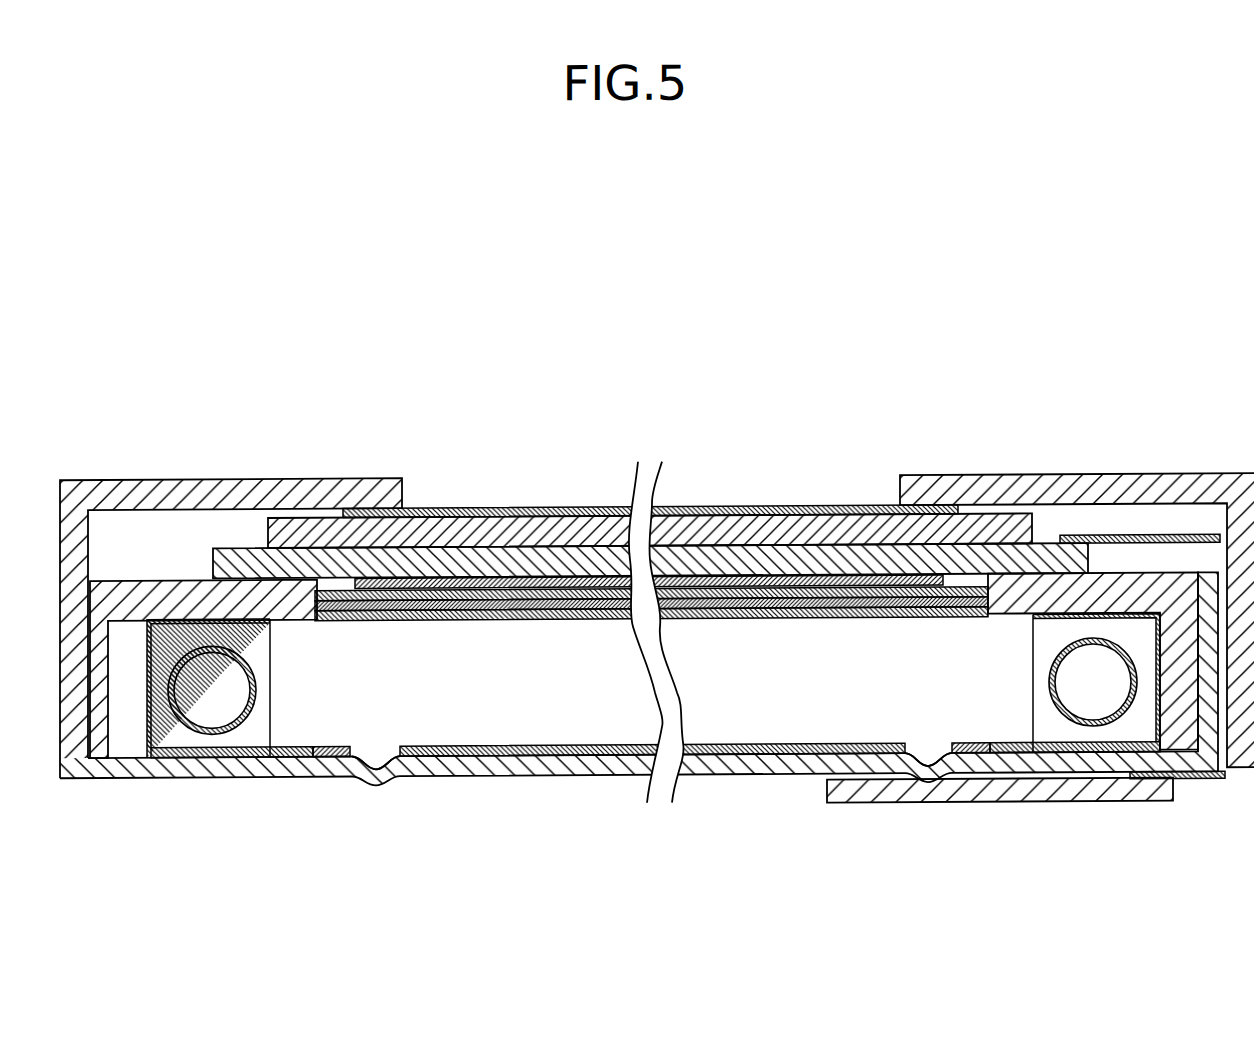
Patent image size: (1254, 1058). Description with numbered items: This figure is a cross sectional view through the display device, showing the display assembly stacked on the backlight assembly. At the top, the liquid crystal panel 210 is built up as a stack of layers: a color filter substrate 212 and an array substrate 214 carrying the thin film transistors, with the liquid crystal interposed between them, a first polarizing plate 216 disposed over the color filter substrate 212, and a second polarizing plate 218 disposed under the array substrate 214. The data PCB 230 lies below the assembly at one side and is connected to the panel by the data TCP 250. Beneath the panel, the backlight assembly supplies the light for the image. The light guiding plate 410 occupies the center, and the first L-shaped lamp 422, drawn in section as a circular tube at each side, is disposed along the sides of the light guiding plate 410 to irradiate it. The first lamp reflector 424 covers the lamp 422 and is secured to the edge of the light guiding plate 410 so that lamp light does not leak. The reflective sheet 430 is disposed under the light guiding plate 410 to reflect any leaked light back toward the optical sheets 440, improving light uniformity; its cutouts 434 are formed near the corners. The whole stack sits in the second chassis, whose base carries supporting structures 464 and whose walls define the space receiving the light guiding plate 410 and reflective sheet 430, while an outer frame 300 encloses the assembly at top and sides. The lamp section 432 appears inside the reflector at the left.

The liquid crystal panel 210 is at (716, 472).
The color filter substrate 212 is at (495, 531).
The array substrate 214 is at (543, 560).
The first polarizing plate 216 is at (443, 507).
The second polarizing plate 218 is at (417, 388).
The data PCB 230 is at (992, 794).
The data TCP 250 is at (1215, 783).
The frame 300 is at (227, 500).
The light guiding plate 410 is at (775, 718).
The first L-shaped lamp 422 is at (1120, 718).
The first lamp reflector 424 is at (1053, 740).
The reflective sheet 430 is at (455, 754).
The lamp 432 is at (190, 725).
The cutout 434 is at (233, 749).
The optical sheets 440 is at (490, 619).
The supporting structure 464 is at (928, 769).